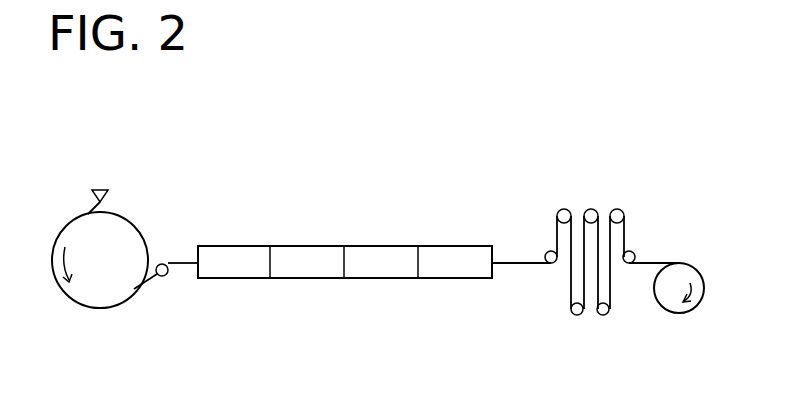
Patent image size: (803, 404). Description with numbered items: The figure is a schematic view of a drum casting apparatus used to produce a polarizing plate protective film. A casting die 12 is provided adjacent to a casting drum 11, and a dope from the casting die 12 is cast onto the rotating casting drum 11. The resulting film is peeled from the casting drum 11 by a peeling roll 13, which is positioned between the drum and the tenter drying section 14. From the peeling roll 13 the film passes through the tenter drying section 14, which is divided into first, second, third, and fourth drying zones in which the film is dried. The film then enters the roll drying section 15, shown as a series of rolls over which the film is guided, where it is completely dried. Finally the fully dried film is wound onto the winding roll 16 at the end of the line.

The casting drum 11 is at (135, 228).
The casting die 12 is at (100, 190).
The peeling roll 13 is at (163, 277).
The tenter drying section 14 is at (306, 227).
The roll drying section 15 is at (582, 187).
The winding roll 16 is at (678, 313).